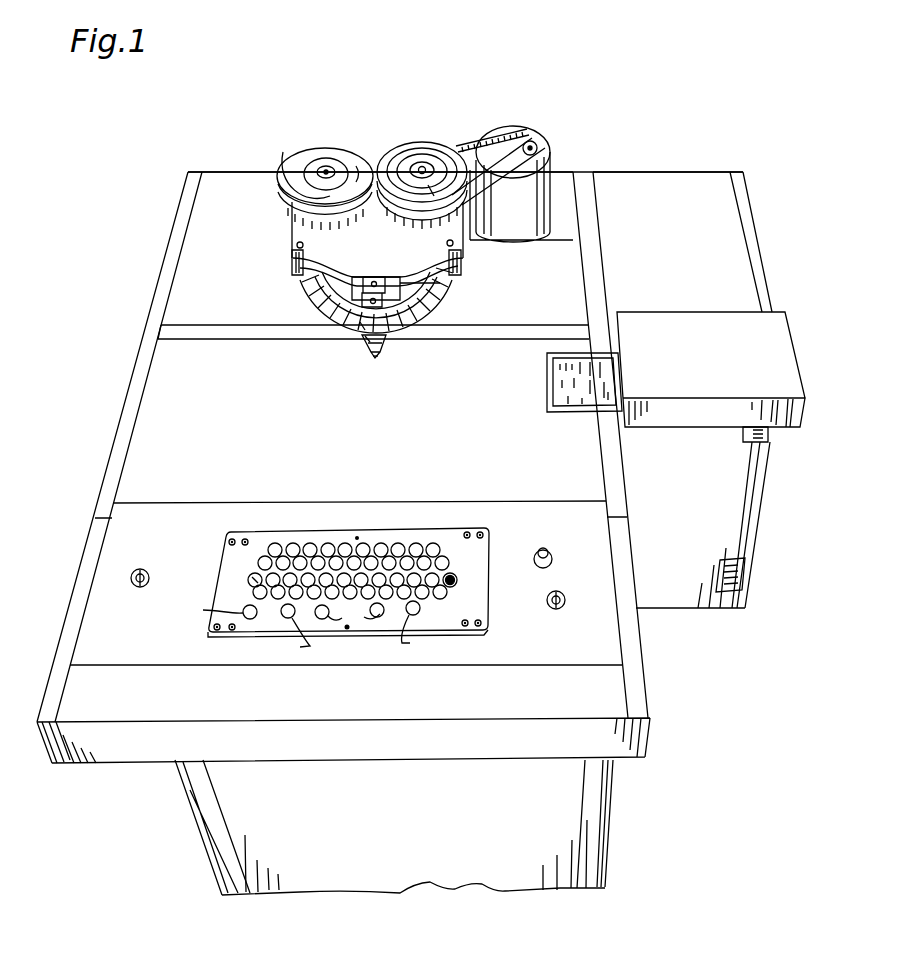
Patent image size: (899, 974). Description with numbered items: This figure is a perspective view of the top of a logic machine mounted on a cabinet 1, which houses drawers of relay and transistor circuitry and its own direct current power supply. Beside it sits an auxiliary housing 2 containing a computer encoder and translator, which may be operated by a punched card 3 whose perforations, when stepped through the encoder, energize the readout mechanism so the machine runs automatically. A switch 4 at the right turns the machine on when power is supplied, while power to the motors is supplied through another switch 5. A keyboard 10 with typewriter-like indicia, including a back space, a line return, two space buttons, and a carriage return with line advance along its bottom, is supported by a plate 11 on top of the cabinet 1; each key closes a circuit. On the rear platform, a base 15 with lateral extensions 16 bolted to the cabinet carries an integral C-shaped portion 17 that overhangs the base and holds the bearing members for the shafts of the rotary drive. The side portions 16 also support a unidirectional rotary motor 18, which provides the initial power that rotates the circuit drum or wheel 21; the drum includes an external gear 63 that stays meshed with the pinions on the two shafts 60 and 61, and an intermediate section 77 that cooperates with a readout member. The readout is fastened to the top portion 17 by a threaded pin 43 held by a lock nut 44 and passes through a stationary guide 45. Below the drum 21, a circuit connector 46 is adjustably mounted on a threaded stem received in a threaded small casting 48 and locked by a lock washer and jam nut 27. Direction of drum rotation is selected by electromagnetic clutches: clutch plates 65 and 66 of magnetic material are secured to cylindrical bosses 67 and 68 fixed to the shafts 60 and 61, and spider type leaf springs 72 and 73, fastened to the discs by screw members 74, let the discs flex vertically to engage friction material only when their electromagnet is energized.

The cabinet 1 is at (383, 806).
The auxiliary housing 2 is at (696, 234).
The punched card 3 is at (617, 375).
The switch 4 is at (558, 597).
The switch 5 is at (147, 572).
The keyboard 10 is at (268, 540).
The plate 11 is at (144, 641).
The base 15 is at (230, 306).
The lateral extensions 16 is at (237, 280).
The C-shaped portion 17 is at (293, 241).
The unidirectional rotary motor 18 is at (548, 170).
The circuit drum or wheel 21 is at (440, 300).
The lock washer and jam nut 27 is at (386, 340).
The threaded pin 43 is at (376, 278).
The lock nut 44 is at (371, 281).
The stationary guide 45 is at (362, 326).
The circuit connector 46 is at (373, 358).
The threaded small casting 48 is at (367, 337).
The shaft 60 is at (424, 165).
The shaft 61 is at (327, 166).
The external gear 63 is at (440, 292).
The clutch plate 65 is at (442, 172).
The clutch plate 66 is at (305, 176).
The cylindrical boss 67 is at (404, 212).
The cylindrical boss 68 is at (323, 164).
The spider type leaf spring 72 is at (420, 180).
The spider type leaf spring 73 is at (290, 205).
The screw members 74 is at (415, 162).
The intermediate section 77 is at (320, 314).